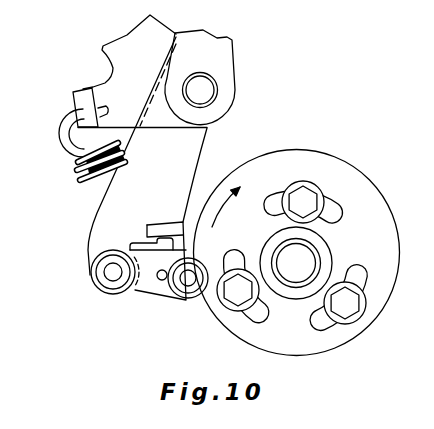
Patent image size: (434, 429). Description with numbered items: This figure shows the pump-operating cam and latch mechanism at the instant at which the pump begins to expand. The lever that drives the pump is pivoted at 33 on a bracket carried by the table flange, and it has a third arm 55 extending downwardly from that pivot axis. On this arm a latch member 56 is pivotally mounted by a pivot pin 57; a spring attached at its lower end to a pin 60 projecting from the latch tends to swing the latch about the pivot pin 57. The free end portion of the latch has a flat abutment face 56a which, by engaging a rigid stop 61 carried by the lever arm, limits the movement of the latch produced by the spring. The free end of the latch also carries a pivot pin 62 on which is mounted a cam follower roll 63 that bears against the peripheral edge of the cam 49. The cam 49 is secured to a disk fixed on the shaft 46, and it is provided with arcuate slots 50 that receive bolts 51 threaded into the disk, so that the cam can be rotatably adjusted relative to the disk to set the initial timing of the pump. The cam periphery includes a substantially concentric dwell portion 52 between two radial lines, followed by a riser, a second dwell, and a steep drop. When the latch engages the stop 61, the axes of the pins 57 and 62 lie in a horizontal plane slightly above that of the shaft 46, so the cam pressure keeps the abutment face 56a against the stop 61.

The lever pivot 33 is at (212, 84).
The shaft 46 is at (307, 262).
The cam 49 is at (313, 138).
The arcuate slots 50 is at (276, 200).
The bolts 51 is at (305, 197).
The concentric dwell portion 52 is at (293, 356).
The third arm 55 is at (124, 178).
The latch member 56 is at (147, 290).
The flat abutment face 56a is at (152, 243).
The pivot pin 57 is at (115, 55).
The pin 60 is at (162, 280).
The rigid stop 61 is at (165, 223).
The pivot pin 62 is at (188, 280).
The cam follower roll 63 is at (197, 272).